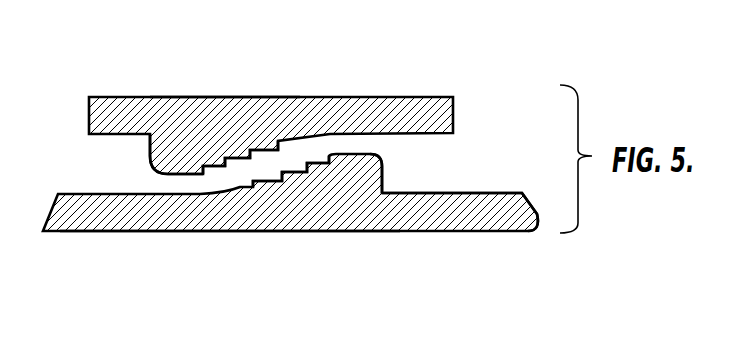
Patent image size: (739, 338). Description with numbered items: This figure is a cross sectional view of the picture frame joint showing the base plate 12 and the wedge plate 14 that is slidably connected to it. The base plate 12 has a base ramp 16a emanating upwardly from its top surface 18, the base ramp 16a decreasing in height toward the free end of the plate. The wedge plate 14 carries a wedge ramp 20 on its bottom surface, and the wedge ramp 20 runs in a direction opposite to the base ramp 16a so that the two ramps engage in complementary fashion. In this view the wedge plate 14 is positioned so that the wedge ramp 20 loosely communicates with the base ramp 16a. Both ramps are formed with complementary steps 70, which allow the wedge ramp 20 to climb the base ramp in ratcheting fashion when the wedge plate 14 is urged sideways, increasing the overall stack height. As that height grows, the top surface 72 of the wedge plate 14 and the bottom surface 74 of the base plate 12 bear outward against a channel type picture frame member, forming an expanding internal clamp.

The base plate 12 is at (431, 236).
The wedge plate 14 is at (381, 96).
The base ramp 16a is at (383, 170).
The top surface 18 is at (481, 193).
The wedge ramp 20 is at (150, 154).
The complementary steps 70 is at (257, 150).
The top surface 72 is at (183, 97).
The bottom surface 74 is at (113, 232).